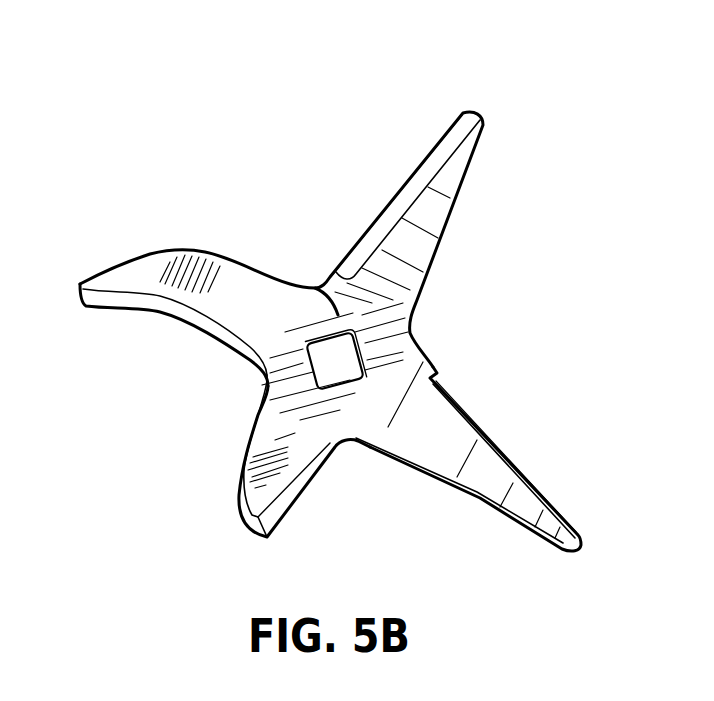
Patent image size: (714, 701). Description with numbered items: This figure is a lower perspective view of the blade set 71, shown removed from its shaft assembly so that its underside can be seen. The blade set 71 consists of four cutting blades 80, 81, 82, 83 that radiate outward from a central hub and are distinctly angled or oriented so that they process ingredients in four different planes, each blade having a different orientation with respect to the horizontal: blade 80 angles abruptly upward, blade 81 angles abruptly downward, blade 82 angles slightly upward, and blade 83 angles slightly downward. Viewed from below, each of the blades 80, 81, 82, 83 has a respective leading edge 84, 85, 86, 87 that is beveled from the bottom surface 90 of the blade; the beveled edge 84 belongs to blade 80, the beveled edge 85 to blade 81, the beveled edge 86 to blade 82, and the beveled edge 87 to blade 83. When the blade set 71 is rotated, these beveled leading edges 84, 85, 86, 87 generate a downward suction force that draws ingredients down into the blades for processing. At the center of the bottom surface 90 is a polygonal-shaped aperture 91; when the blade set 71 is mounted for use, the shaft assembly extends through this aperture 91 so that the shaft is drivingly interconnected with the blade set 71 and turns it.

The blade set 71 is at (513, 340).
The cutting blade 80 is at (213, 272).
The cutting blade 81 is at (435, 210).
The cutting blade 82 is at (480, 477).
The cutting blade 83 is at (260, 484).
The leading edge 84 is at (187, 318).
The leading edge 85 is at (428, 165).
The leading edge 86 is at (529, 486).
The leading edge 87 is at (293, 499).
The bottom surface 90 is at (313, 287).
The polygonal-shaped aperture 91 is at (305, 356).